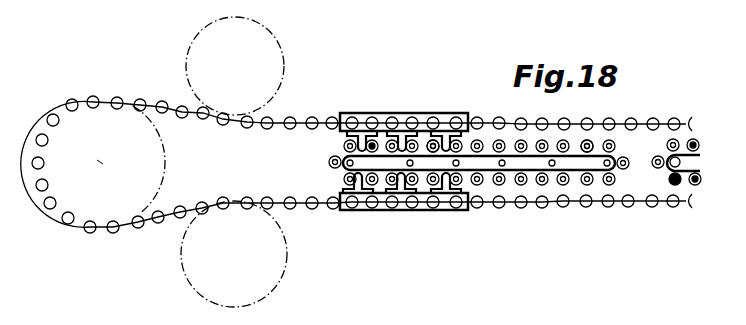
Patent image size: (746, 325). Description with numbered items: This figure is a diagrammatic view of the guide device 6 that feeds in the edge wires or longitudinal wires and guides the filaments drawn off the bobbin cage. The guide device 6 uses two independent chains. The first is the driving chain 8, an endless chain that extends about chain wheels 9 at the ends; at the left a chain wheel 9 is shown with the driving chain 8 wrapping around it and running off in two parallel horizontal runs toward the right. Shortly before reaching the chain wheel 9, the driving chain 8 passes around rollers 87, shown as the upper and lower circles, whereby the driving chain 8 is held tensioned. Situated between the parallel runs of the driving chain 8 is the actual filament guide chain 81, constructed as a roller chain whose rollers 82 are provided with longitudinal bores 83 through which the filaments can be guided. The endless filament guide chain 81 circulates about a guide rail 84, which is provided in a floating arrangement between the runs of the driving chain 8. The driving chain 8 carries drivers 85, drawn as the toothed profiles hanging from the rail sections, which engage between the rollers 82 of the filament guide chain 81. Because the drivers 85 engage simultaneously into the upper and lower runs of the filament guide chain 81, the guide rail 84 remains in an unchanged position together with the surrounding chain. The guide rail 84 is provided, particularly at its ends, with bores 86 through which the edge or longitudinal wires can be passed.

The chain wheel 9 is at (103, 112).
The roller 87 is at (270, 39).
The chain 8 is at (278, 120).
The driver 85 is at (402, 133).
The filament guide chain 81 is at (425, 140).
The guide rail 84 is at (486, 160).
The roller 82 is at (500, 142).
The longitudinal bore 83 is at (590, 142).
The bore 86 is at (344, 166).
The guide device 6 is at (646, 104).